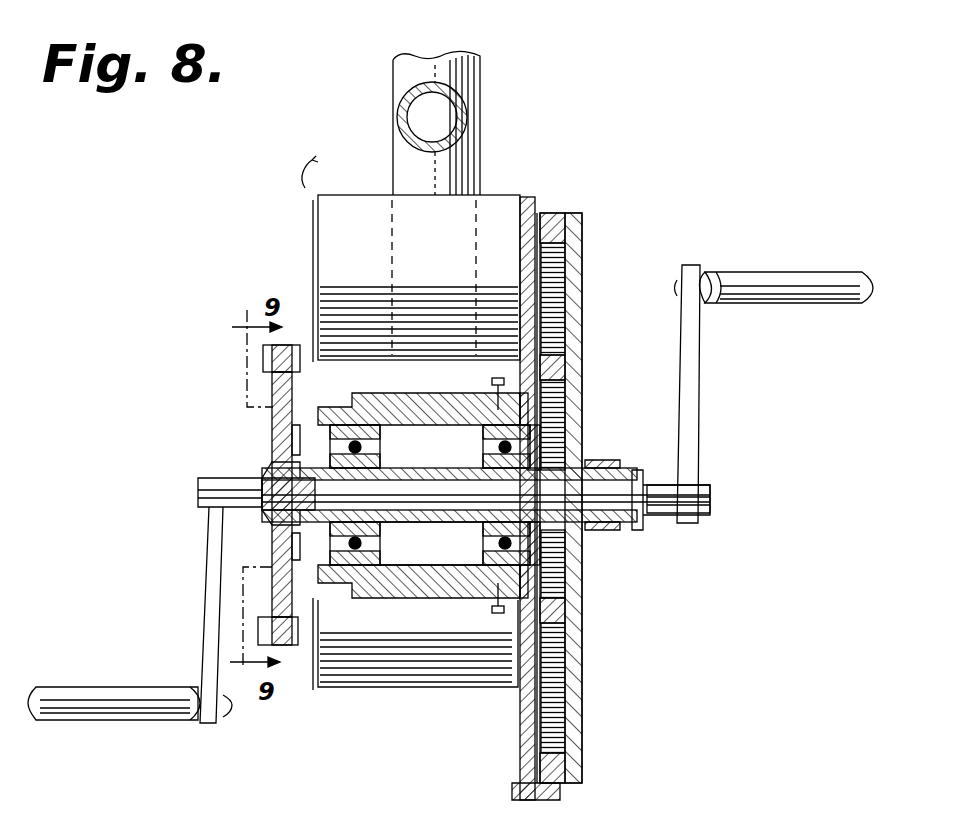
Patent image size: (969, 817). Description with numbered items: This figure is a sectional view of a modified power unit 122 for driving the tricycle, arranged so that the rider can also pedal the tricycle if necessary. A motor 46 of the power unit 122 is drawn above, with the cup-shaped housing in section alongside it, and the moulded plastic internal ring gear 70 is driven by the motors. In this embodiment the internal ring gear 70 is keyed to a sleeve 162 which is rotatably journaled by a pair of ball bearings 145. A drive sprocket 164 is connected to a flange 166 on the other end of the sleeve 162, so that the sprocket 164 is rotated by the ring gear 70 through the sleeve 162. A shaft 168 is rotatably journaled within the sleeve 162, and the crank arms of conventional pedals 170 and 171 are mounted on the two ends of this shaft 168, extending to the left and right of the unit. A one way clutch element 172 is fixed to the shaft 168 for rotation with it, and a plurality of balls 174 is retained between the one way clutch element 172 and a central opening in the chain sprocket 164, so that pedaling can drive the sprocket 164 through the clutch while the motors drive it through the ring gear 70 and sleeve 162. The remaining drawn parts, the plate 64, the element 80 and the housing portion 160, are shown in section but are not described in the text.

The motor 46 is at (357, 205).
The end plate 64 is at (540, 196).
The power unit 122 is at (602, 185).
The internal ring gear 70 is at (590, 348).
The bushing 80 is at (582, 290).
The housing 160 is at (312, 418).
The ball bearings 145 is at (382, 456).
The sleeve 162 is at (420, 470).
The shaft 168 is at (398, 520).
The drive sprocket 164 is at (275, 386).
The flange 166 is at (283, 432).
The balls 174 is at (268, 452).
The one way clutch element 172 is at (262, 465).
The pedal 170 is at (104, 688).
The pedal 171 is at (772, 303).